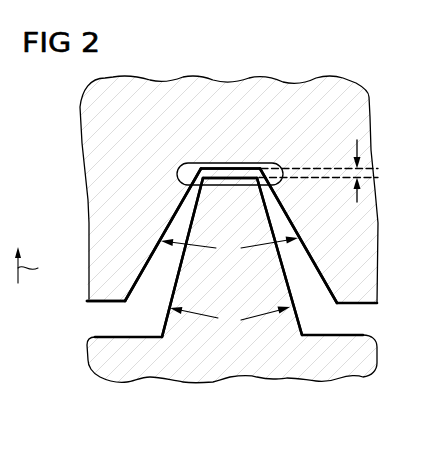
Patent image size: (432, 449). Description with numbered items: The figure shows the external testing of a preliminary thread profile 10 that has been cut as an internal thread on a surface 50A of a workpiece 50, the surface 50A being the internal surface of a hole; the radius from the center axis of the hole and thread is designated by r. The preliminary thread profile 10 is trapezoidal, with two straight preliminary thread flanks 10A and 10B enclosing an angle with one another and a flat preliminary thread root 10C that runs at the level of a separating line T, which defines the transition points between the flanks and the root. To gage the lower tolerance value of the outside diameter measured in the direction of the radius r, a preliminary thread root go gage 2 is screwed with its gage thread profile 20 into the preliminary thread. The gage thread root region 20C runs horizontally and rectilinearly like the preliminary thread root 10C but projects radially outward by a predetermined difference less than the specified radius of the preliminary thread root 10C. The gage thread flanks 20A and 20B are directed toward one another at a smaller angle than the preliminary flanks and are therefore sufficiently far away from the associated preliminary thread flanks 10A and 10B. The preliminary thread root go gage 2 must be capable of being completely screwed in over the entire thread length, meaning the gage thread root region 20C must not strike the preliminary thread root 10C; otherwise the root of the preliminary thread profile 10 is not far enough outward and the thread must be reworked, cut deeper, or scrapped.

The preliminary thread root go gage 2 is at (290, 378).
The preliminary thread profile 10 is at (187, 186).
The preliminary thread flank 10A is at (163, 233).
The preliminary thread flank 10B is at (278, 200).
The preliminary thread root 10C is at (252, 167).
The gage thread profile 20 is at (277, 282).
The gage thread flank 20A is at (177, 280).
The gage thread flank 20B is at (278, 253).
The gage thread root region 20C is at (208, 164).
The workpiece 50 is at (353, 90).
The surface 50A is at (102, 302).
The separating line T is at (331, 167).
The radius r is at (33, 266).